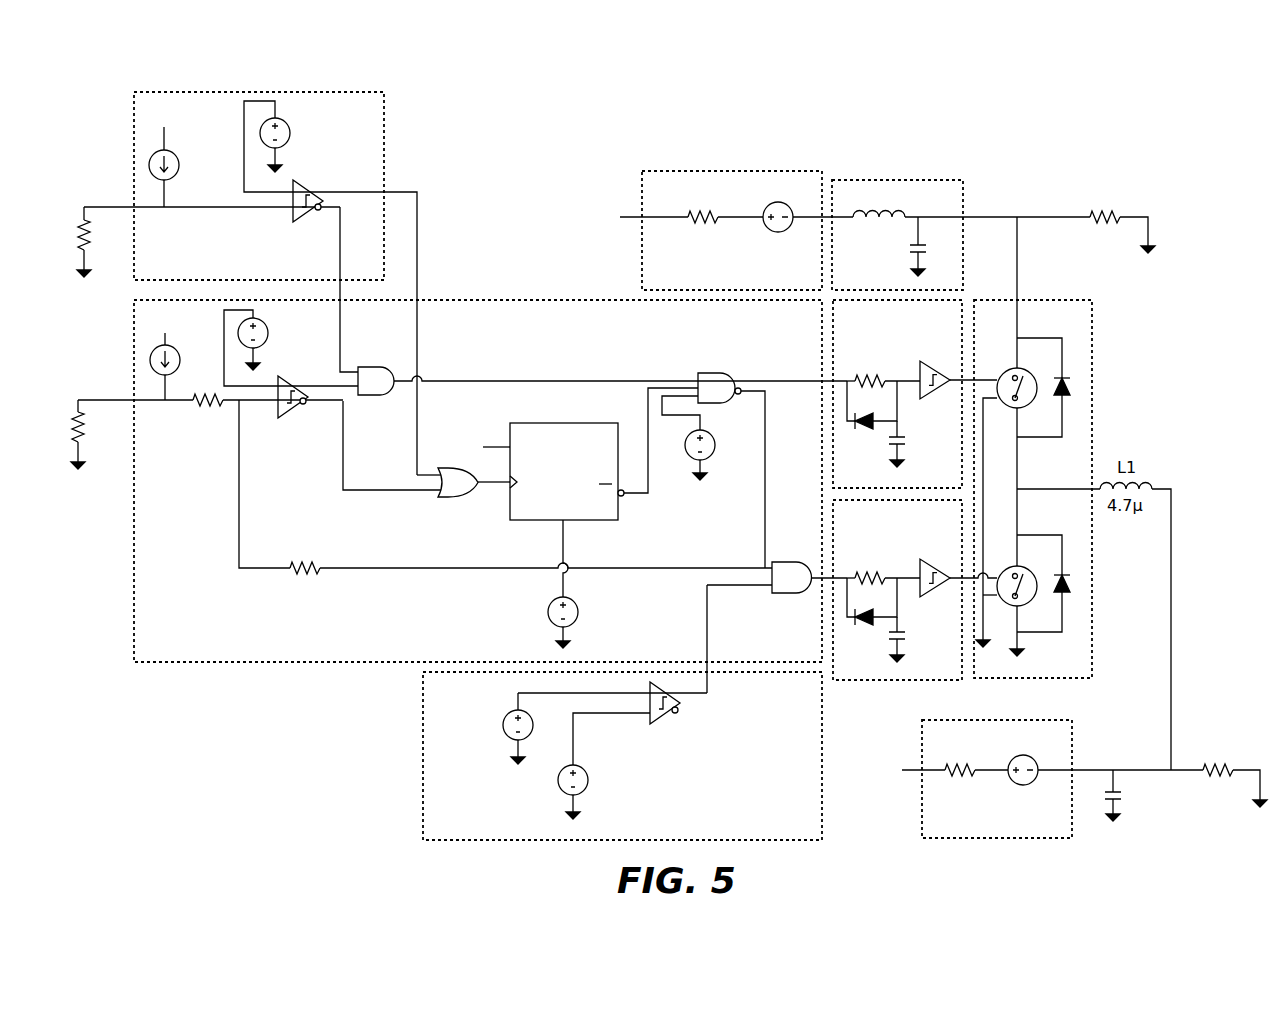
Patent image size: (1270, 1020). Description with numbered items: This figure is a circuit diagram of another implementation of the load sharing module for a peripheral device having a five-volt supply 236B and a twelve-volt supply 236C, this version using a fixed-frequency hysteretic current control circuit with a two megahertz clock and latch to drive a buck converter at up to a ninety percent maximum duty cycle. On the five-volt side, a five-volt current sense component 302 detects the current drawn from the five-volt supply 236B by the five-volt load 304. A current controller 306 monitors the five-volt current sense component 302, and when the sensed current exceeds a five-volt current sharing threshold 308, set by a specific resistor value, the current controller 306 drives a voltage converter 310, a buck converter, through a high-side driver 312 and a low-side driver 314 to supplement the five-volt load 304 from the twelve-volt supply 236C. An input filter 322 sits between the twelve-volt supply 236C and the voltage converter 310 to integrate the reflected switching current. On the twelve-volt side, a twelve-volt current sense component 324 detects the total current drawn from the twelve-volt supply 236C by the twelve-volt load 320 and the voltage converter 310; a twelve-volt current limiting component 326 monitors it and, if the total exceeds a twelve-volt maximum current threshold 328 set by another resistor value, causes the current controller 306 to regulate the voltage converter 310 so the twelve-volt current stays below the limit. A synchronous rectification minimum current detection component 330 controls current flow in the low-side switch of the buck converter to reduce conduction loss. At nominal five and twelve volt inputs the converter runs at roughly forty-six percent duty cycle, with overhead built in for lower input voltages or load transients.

The 5V current sense component 302 is at (997, 779).
The 5V load 304 is at (1232, 728).
The current controller 306 is at (462, 450).
The 5V current sharing threshold 308 is at (80, 393).
The voltage converter 310 is at (1037, 447).
The high-side driver 312 is at (915, 394).
The low-side driver 314 is at (915, 590).
The 12V load 320 is at (1132, 170).
The input filter 322 is at (924, 235).
The 12V current sense component 324 is at (747, 230).
The 12V current limiting component 326 is at (250, 283).
The 12V maximum current threshold 328 is at (83, 200).
The synchronous rectification minimum current detection component 330 is at (622, 756).
The +5V supply 236B is at (875, 788).
The +12V supply 236C is at (581, 199).